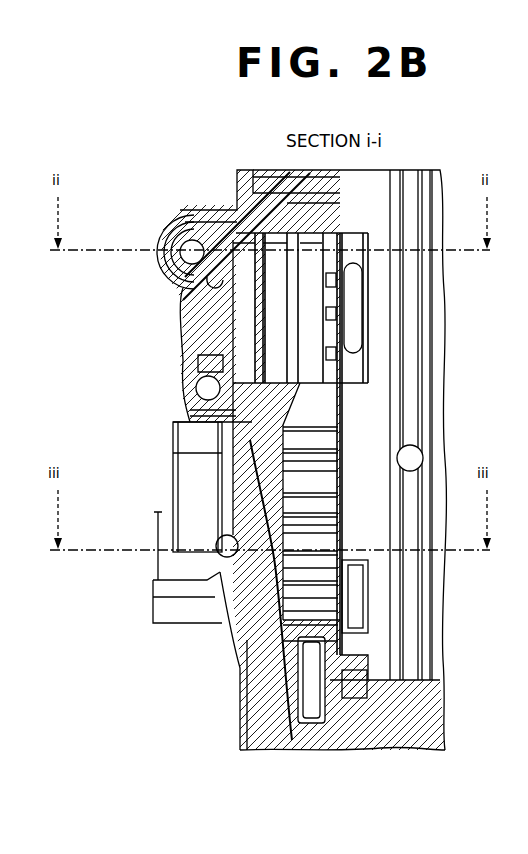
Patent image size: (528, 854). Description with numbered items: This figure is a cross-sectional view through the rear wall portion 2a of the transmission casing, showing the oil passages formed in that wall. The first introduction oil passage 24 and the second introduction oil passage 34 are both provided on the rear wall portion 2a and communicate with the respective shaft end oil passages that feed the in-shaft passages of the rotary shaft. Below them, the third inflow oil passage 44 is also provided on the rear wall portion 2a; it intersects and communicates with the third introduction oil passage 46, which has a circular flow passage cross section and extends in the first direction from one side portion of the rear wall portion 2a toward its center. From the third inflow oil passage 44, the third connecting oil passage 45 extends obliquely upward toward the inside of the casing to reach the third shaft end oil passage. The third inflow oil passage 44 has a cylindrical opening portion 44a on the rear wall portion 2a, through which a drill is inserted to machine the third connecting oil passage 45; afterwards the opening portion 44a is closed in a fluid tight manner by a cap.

The first introduction oil passage 24 is at (166, 222).
The rear wall portion 2a is at (183, 322).
The second introduction oil passage 34 is at (182, 380).
The third connecting oil passage 45 is at (192, 416).
The third inflow oil passage 44 is at (222, 493).
The opening portion 44a is at (153, 572).
The third introduction oil passage 46 is at (226, 558).